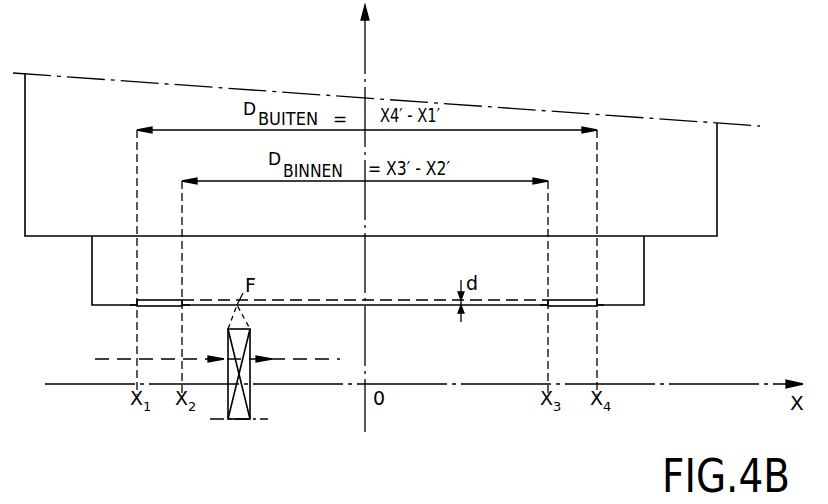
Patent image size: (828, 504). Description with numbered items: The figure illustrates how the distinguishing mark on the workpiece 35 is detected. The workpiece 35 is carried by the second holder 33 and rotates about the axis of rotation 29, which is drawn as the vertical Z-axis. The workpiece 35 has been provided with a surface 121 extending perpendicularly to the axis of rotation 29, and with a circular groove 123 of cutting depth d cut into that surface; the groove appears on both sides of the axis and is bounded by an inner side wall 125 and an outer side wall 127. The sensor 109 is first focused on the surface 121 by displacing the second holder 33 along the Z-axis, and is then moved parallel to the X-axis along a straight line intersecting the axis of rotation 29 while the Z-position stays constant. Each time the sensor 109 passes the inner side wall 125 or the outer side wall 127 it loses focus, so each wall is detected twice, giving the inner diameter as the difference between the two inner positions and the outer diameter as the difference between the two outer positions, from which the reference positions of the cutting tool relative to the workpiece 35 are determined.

The axis of rotation 29 is at (366, 58).
The second holder 33 is at (717, 158).
The workpiece 35 is at (644, 256).
The sensor 109 is at (250, 397).
The surface 121 is at (285, 300).
The circular groove 123 is at (160, 299).
The inner side wall 125 is at (183, 304).
The outer side wall 127 is at (137, 302).